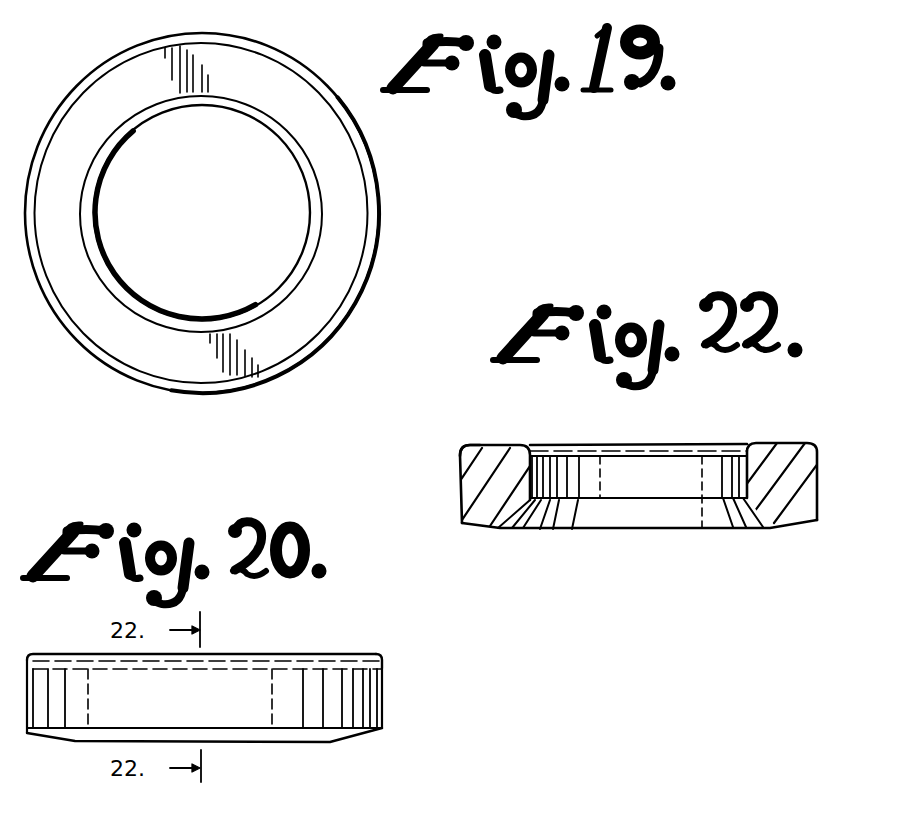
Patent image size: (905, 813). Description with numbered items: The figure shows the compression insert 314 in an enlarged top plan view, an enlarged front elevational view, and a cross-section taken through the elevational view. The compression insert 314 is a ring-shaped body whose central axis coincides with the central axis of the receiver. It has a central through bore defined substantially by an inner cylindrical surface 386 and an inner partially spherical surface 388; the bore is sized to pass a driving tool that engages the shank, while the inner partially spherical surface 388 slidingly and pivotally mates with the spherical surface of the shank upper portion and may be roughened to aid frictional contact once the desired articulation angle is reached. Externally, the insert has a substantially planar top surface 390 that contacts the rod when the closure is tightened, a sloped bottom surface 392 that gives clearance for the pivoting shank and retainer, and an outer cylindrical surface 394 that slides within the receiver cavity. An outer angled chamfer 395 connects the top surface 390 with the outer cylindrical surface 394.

In FIG. 19, the compression insert 314 is at (379, 214).
In FIG. 20, the compression insert 314 is at (383, 680).
In FIG. 22, the compression insert 314 is at (818, 455).
In FIG. 19, the inner cylindrical surface 386 is at (110, 263).
In FIG. 22, the inner cylindrical surface 386 is at (548, 456).
In FIG. 22, the inner partially spherical surface 388 is at (530, 503).
In FIG. 19, the top surface 390 is at (338, 280).
In FIG. 20, the top surface 390 is at (354, 654).
In FIG. 22, the top surface 390 is at (775, 440).
In FIG. 20, the bottom surface 392 is at (340, 741).
In FIG. 22, the bottom surface 392 is at (783, 525).
In FIG. 19, the outer cylindrical surface 394 is at (300, 358).
In FIG. 22, the outer cylindrical surface 394 is at (462, 483).
In FIG. 19, the chamfer 395 is at (344, 310).
In FIG. 20, the chamfer 395 is at (383, 655).
In FIG. 22, the chamfer 395 is at (462, 447).